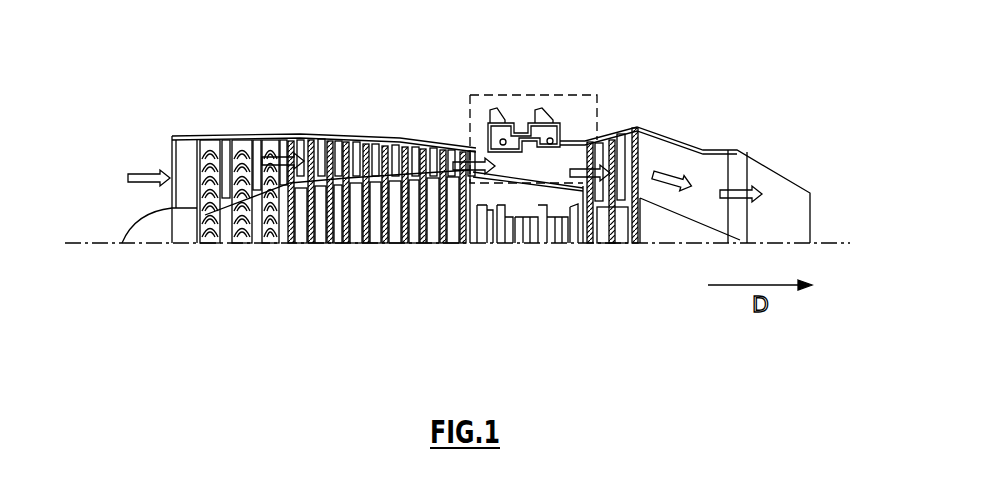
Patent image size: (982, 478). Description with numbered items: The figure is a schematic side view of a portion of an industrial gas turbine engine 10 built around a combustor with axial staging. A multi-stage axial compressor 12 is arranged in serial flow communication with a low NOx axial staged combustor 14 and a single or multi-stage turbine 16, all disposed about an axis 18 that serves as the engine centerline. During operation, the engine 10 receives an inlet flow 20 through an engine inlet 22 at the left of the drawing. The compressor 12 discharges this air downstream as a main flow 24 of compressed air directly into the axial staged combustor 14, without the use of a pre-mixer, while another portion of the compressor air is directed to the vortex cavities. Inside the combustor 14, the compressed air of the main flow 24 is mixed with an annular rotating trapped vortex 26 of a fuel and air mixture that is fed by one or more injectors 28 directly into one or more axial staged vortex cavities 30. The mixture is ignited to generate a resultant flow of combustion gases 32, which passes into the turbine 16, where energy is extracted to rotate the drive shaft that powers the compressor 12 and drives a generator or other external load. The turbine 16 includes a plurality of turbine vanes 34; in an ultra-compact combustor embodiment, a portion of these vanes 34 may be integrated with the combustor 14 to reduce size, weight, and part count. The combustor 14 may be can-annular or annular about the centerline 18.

The industrial gas turbine engine 10 is at (212, 77).
The multi-stage axial compressor 12 is at (468, 258).
The low NOx axial staged combustor 14 is at (498, 160).
The turbine 16 is at (652, 260).
The axis 18 is at (830, 243).
The inlet flow 20 is at (139, 166).
The engine inlet 22 is at (162, 142).
The main flow 24 is at (467, 151).
The annular rotating trapped vortex 26 is at (553, 150).
The injector 28 is at (498, 114).
The axial staged vortex cavity 30 is at (488, 130).
The flow of combustion gases 32 is at (679, 177).
The turbine vanes 34 is at (590, 147).